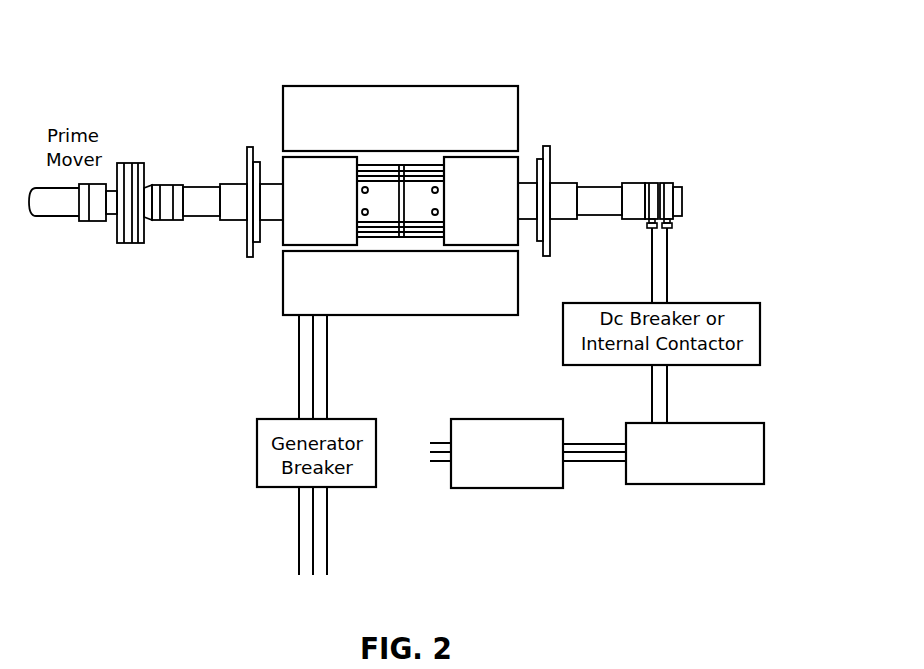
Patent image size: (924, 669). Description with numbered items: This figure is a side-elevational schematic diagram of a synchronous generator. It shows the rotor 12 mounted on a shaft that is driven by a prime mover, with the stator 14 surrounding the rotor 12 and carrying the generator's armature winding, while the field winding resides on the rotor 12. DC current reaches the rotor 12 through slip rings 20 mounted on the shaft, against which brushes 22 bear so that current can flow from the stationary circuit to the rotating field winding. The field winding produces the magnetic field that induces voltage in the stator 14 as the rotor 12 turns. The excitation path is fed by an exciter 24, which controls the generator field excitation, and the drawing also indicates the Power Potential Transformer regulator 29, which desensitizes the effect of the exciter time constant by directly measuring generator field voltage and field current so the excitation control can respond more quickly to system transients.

The rotor 12 is at (222, 243).
The stator 14 is at (379, 87).
The slip rings 20 is at (752, 83).
The brushes 22 is at (679, 229).
The exciter 24 is at (683, 485).
The Power Potential Transformer (PPT) regulator 29 is at (537, 487).